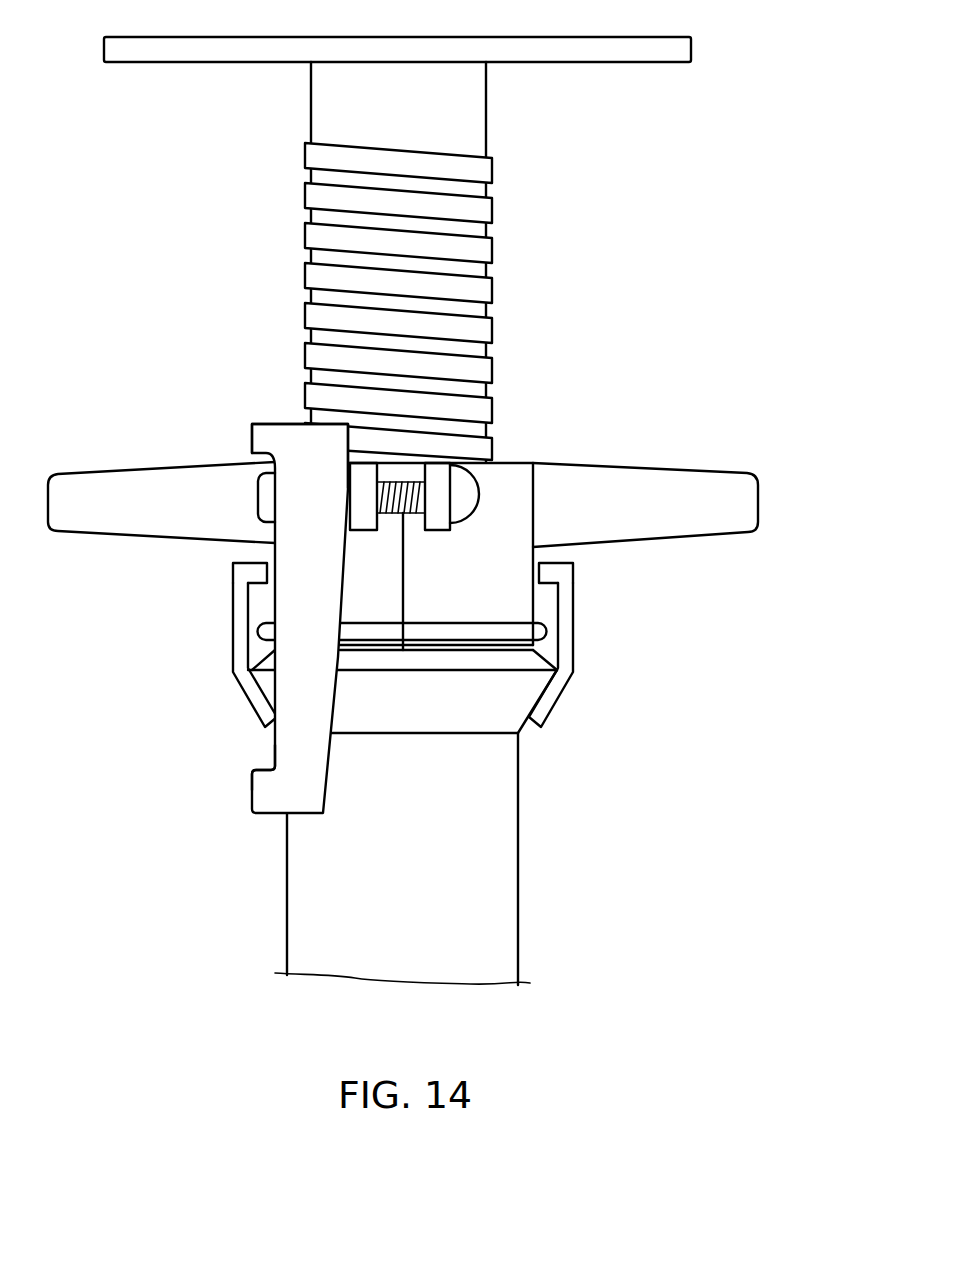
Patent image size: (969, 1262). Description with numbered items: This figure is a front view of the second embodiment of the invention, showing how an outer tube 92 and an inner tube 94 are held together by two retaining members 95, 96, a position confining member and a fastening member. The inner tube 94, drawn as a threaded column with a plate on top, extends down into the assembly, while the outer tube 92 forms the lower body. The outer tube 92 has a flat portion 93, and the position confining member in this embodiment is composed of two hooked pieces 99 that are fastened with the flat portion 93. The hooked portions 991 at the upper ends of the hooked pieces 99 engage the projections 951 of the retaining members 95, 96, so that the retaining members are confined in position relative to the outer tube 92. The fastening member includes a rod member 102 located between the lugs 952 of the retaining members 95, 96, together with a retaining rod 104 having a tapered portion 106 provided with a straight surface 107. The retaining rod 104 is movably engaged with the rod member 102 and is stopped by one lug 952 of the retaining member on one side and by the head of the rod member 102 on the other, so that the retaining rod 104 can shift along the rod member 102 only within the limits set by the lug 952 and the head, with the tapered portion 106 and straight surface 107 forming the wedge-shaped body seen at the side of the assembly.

The outer tube 92 is at (523, 890).
The flat portion 93 is at (523, 697).
The inner tube 94 is at (500, 290).
The retaining member 95 is at (502, 595).
The projection 951 is at (535, 632).
The lug 952 is at (367, 473).
The retaining member 96 is at (380, 562).
The hooked piece 99 is at (232, 660).
The hooked portion 991 is at (253, 572).
The rod member 102 is at (462, 497).
The retaining rod 104 is at (283, 788).
The tapered portion 106 is at (330, 717).
The straight surface 107 is at (347, 487).